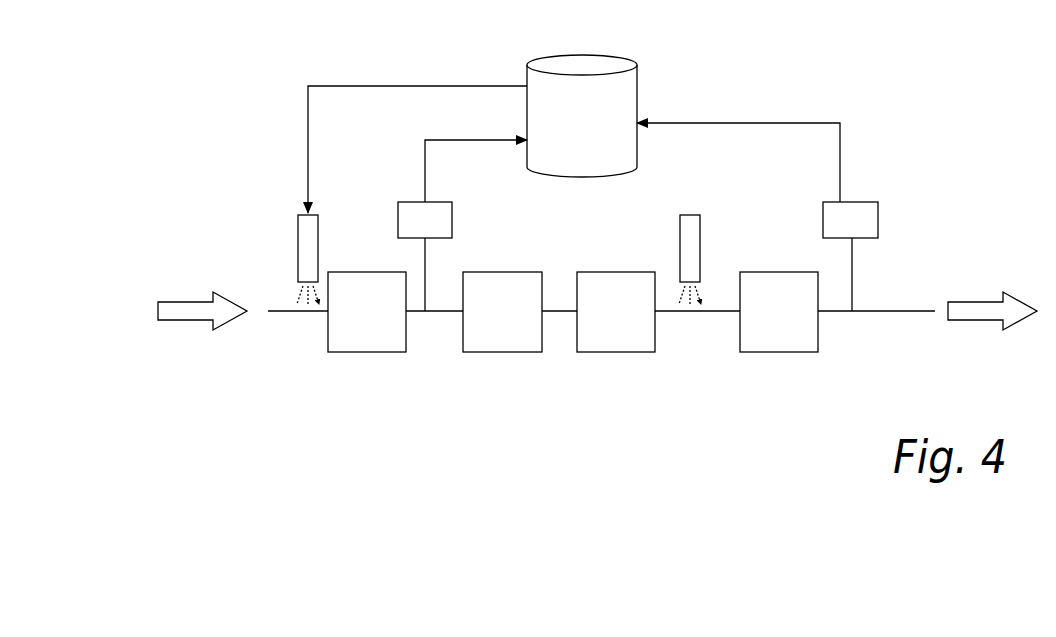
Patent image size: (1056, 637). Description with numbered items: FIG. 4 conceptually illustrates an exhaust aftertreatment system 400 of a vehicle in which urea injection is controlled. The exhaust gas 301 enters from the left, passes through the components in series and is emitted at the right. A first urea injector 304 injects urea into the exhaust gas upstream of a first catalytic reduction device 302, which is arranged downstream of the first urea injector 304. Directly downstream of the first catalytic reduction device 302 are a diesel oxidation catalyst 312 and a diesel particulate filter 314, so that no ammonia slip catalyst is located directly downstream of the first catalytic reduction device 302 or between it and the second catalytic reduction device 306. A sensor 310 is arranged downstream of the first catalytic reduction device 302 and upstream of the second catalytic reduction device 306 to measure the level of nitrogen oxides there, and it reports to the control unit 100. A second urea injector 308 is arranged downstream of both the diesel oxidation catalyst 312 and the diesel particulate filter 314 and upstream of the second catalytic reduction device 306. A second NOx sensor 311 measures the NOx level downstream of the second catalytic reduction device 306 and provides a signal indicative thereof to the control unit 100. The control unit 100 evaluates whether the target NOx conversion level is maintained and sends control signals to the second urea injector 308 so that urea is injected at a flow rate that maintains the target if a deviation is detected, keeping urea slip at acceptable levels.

The exhaust aftertreatment system 400 is at (205, 145).
The exhaust gas 301 is at (190, 302).
The first urea injector 304 is at (298, 263).
The first catalytic reduction device 302 is at (388, 327).
The sensor 310 is at (452, 215).
The diesel oxidation catalyst 312 is at (525, 327).
The diesel particulate filter 314 is at (638, 327).
The second urea injector 308 is at (700, 252).
The second catalytic reduction device 306 is at (801, 327).
The second NOx sensor 311 is at (845, 200).
The control unit 100 is at (603, 136).